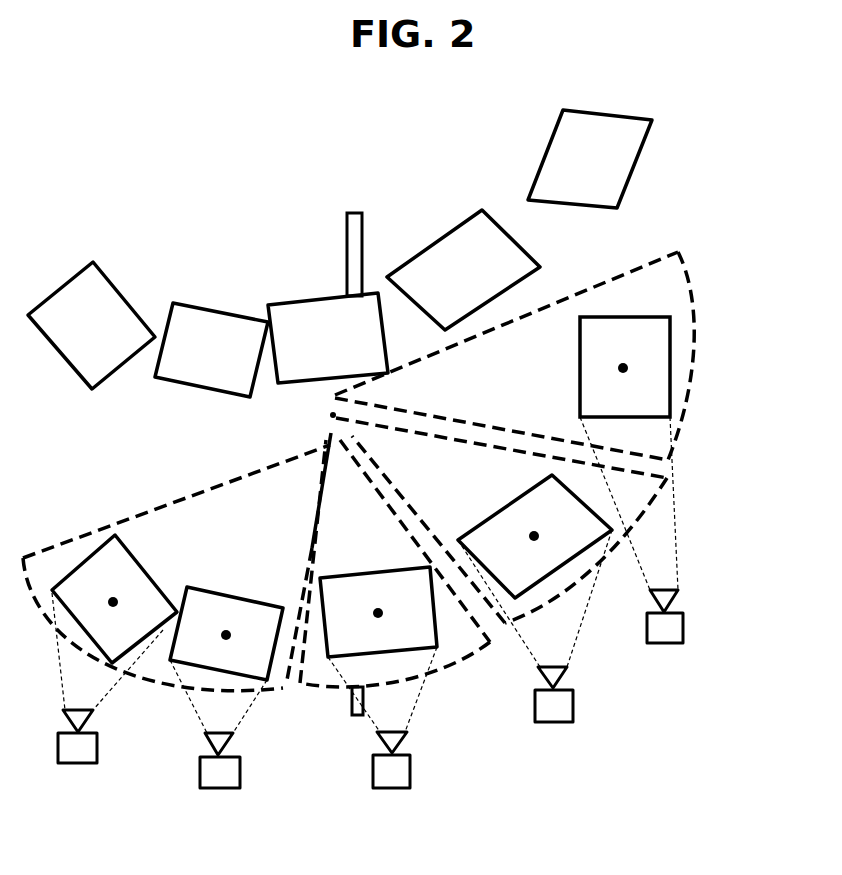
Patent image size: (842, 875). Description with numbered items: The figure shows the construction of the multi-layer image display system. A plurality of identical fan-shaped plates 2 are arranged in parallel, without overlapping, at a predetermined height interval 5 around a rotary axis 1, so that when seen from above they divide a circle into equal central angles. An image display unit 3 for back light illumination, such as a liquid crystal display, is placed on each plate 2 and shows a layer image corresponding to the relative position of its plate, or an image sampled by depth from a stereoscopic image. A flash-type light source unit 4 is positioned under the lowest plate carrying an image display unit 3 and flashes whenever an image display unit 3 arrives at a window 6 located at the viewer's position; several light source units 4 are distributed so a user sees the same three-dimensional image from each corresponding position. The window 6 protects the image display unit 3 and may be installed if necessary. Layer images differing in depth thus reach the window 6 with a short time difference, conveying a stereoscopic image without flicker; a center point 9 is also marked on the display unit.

The rotary axis 1 is at (348, 232).
The fan-shaped plate 2 is at (693, 287).
The image display unit 3 is at (665, 335).
The light source unit 4 is at (685, 630).
The height interval 5 is at (327, 413).
The window 6 is at (630, 155).
The center point 9 is at (623, 368).